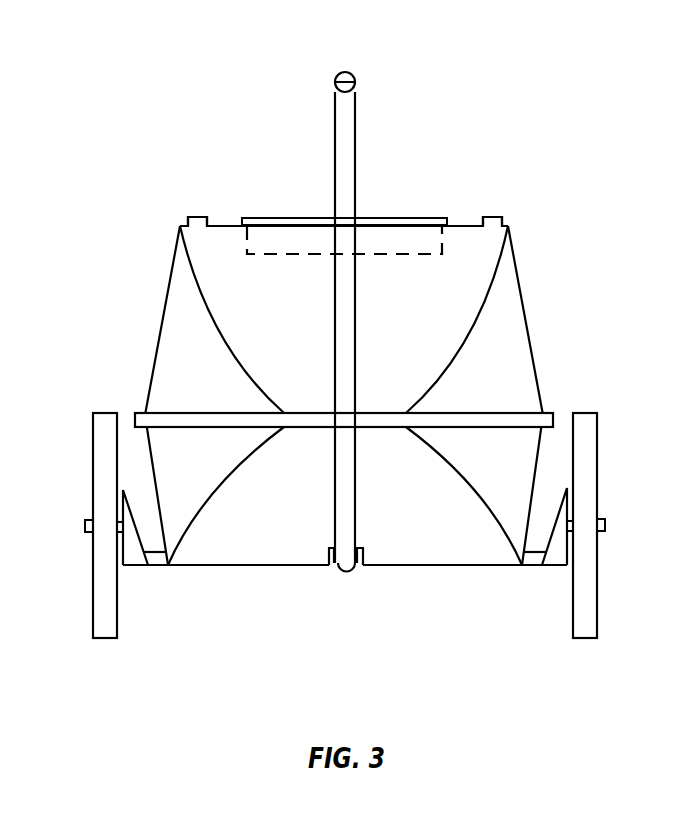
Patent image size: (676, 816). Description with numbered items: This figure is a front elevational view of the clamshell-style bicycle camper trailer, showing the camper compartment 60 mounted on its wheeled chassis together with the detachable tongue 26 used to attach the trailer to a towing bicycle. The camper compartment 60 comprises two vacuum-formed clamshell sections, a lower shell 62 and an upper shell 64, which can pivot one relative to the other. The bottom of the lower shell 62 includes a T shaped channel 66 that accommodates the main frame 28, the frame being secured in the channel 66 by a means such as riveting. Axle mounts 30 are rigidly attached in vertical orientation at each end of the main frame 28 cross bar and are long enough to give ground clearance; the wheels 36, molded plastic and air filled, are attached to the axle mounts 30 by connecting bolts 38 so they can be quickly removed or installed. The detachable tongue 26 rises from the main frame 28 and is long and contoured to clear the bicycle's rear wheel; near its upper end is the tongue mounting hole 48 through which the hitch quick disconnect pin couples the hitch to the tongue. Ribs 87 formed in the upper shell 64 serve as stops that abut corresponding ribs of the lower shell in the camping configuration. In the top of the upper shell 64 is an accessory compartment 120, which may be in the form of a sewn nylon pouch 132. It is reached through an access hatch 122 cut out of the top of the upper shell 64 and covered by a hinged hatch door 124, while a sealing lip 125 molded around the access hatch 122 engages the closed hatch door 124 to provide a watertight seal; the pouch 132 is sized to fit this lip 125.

The detachable tongue 26 is at (344, 150).
The main frame 28 is at (343, 573).
The axle mounts 30 is at (136, 563).
The wheels 36 is at (100, 639).
The connecting bolts 38 is at (85, 525).
The tongue mounting hole 48 is at (337, 75).
The camper compartment 60 is at (601, 176).
The lower shell 62 is at (252, 554).
The upper shell 64 is at (170, 343).
The T shaped channel 66 is at (365, 565).
The ribs 87 is at (192, 220).
The accessory compartment 120 is at (388, 238).
The access hatch 122 is at (236, 218).
The hatch door 124 is at (327, 219).
The sealing lip 125 is at (239, 219).
The pouch 132 is at (435, 242).